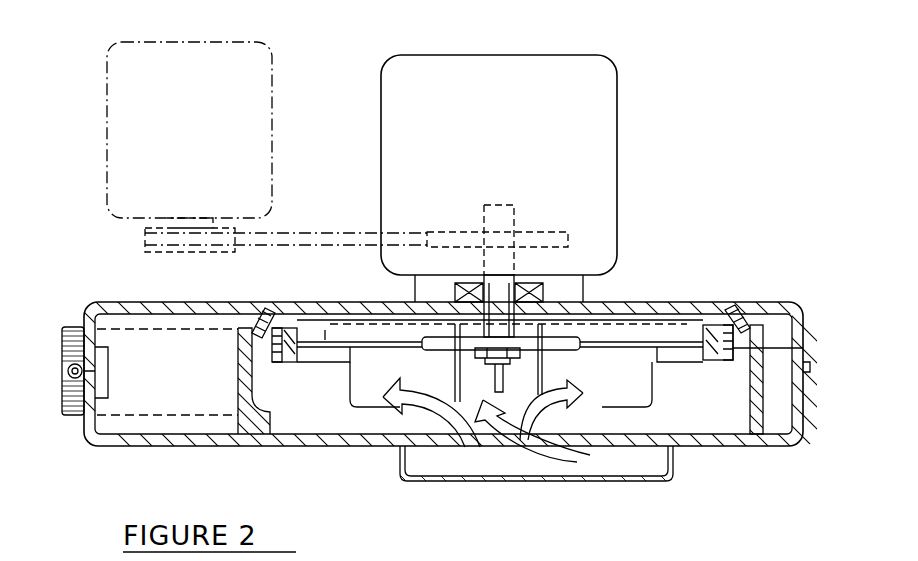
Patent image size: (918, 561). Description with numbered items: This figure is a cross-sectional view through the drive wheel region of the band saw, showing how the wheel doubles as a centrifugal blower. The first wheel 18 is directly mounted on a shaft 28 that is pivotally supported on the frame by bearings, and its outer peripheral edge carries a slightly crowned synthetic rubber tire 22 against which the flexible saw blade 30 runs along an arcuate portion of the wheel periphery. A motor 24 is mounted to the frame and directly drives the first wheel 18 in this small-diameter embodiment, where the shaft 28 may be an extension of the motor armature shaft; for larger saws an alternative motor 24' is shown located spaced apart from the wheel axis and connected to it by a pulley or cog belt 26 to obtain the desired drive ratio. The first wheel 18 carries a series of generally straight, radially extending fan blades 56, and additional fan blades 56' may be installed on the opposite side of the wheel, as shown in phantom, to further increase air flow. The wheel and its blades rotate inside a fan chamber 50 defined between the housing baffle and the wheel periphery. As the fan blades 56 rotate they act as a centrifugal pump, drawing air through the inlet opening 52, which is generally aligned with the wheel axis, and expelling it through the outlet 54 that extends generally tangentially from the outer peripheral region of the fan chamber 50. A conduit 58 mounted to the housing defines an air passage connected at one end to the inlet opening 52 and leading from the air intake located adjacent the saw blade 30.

The first wheel 18 is at (293, 362).
The tire 22 is at (727, 332).
The motor 24 is at (552, 178).
The motor 24' is at (197, 113).
The pulley or cog belt 26 is at (313, 233).
The shaft 28 is at (498, 292).
The saw blade 30 is at (805, 347).
The fan chamber 50 is at (697, 398).
The inlet opening 52 is at (492, 450).
The outlet 54 is at (72, 416).
The fan blades 56 is at (501, 413).
The fan blades 56' is at (502, 313).
The conduit 58 is at (468, 481).